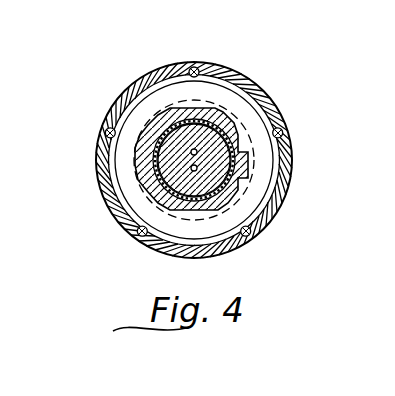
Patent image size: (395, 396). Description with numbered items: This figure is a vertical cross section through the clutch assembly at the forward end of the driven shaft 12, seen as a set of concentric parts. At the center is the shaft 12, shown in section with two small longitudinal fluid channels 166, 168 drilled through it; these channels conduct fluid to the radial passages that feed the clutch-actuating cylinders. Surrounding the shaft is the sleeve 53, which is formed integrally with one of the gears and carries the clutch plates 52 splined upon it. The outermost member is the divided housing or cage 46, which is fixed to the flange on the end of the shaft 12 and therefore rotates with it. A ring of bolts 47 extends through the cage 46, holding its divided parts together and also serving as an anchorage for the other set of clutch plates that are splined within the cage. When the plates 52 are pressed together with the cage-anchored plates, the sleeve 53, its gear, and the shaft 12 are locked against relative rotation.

The shaft 12 is at (200, 166).
The divided housing or cage 46 is at (143, 81).
The bolts 47 is at (198, 67).
The clutch plates 52 is at (122, 154).
The sleeve 53 is at (147, 186).
The longitudinal fluid channel 166 is at (197, 152).
The longitudinal fluid channel 168 is at (198, 169).